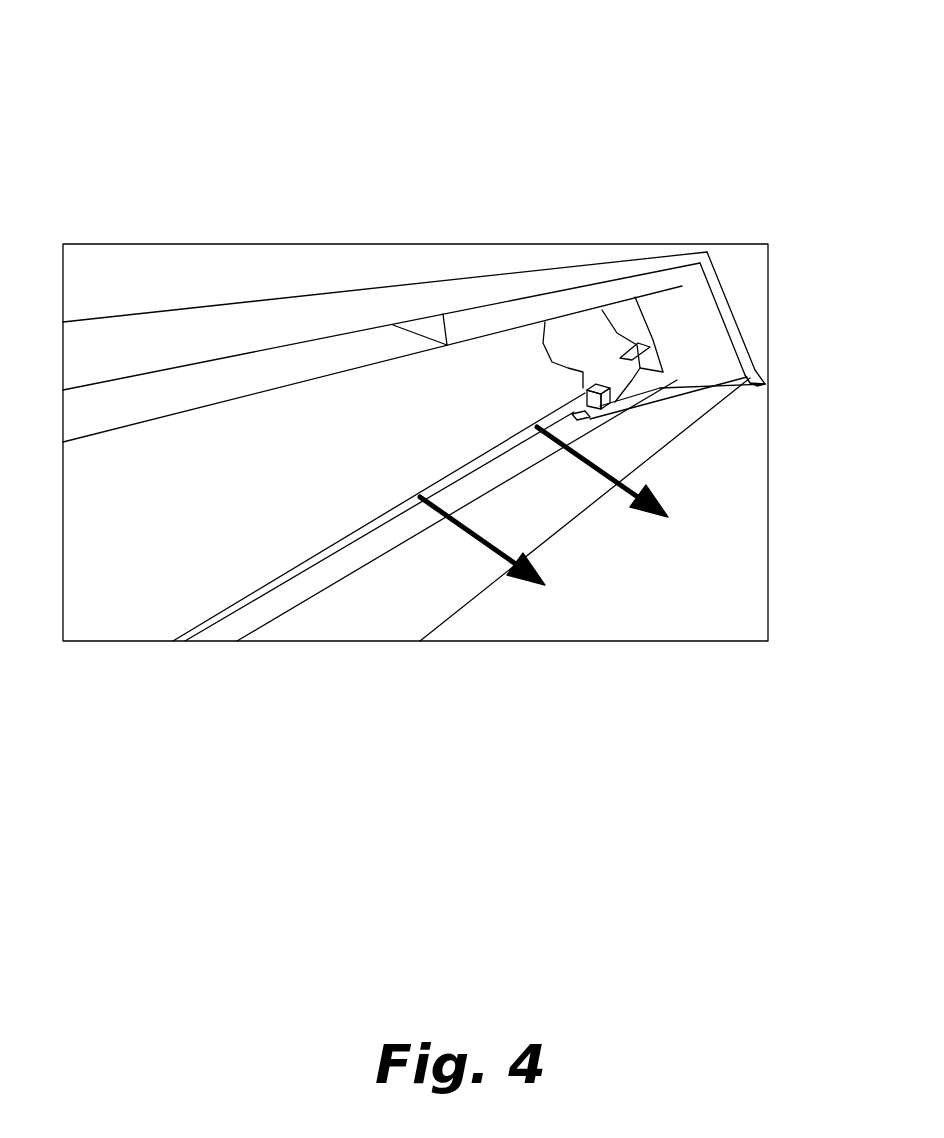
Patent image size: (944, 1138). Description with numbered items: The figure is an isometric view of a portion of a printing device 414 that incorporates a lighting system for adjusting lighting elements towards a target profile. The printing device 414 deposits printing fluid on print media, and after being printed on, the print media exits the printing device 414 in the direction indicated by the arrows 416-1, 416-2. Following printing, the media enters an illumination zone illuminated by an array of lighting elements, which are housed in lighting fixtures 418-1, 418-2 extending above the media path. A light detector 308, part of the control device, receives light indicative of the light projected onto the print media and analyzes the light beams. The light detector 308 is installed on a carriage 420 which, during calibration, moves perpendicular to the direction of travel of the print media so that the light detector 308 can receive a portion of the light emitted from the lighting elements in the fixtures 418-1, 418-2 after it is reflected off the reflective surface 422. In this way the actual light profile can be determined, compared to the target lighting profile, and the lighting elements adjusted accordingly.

The printing device 414 is at (175, 103).
The lighting fixture 418-1 is at (307, 360).
The lighting fixture 418-2 is at (525, 315).
The carriage 420 is at (603, 358).
The light detector 308 is at (611, 398).
The reflective surface 422 is at (757, 383).
The arrow 416-1 is at (520, 557).
The arrow 416-2 is at (652, 497).